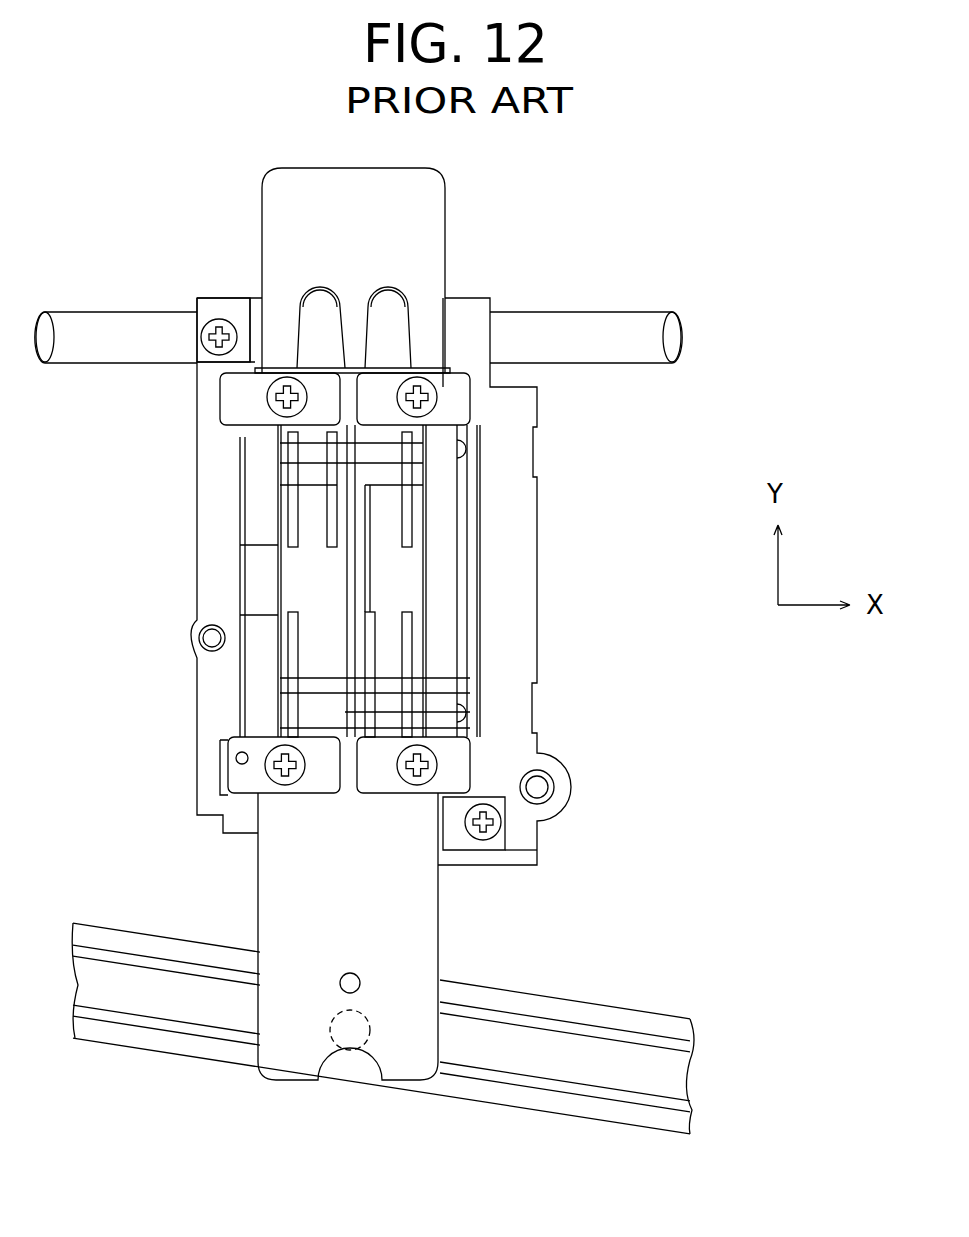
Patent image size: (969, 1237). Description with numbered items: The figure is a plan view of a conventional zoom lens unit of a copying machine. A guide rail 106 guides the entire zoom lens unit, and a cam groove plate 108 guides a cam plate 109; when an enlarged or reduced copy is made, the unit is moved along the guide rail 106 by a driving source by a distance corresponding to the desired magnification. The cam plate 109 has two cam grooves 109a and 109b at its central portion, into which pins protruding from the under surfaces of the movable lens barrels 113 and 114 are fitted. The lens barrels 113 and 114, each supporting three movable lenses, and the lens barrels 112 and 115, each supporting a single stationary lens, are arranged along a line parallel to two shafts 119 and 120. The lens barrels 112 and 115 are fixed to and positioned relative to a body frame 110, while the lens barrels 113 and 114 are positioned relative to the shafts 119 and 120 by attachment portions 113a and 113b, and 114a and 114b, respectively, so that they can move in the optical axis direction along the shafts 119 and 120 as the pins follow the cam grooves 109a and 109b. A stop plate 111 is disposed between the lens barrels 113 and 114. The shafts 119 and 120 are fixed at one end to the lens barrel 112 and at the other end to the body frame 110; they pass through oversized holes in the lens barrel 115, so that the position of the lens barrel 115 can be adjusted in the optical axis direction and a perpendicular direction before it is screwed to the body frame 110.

The guide rail 106 is at (105, 325).
The cam groove plate 108 is at (100, 970).
The cam plate 109 is at (270, 876).
The cam groove 109a is at (300, 312).
The cam groove 109b is at (410, 312).
The body frame 110 is at (197, 550).
The stop plate 111 is at (430, 535).
The lens barrel 112 is at (245, 590).
The lens barrel 113 is at (310, 648).
The attachment portion 113a is at (290, 458).
The attachment portion 113b is at (330, 455).
The lens barrel 114 is at (415, 595).
The attachment portion 114a is at (365, 718).
The attachment portion 114b is at (400, 690).
The lens barrel 115 is at (455, 555).
The shaft 119 is at (470, 452).
The shaft 120 is at (470, 712).